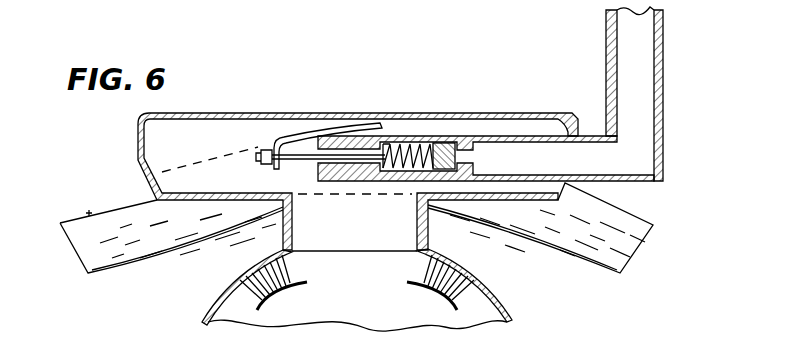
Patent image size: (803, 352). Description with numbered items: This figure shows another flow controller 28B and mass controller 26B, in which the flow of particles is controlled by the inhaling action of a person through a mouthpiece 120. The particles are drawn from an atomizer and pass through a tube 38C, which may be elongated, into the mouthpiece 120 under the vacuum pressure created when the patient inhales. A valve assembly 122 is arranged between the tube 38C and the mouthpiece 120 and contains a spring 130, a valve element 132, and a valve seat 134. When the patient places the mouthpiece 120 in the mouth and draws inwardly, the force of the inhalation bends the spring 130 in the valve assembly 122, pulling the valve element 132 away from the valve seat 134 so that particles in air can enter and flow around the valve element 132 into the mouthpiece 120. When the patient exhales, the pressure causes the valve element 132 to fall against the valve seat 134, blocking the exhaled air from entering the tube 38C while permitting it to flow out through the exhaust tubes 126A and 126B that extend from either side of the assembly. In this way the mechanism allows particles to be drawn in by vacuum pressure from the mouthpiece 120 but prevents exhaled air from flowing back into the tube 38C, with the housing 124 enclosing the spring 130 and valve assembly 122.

The mass controller 26B is at (315, 84).
The tube 38C is at (665, 68).
The mouthpiece 120 is at (504, 282).
The valve assembly 122 is at (312, 172).
The housing 124 is at (138, 143).
The exhaust tube 126A is at (89, 211).
The exhaust tube 126B is at (634, 214).
The spring 130 is at (278, 134).
The valve element 132 is at (444, 141).
The valve seat 134 is at (473, 154).
The flow controller 28B is at (219, 280).